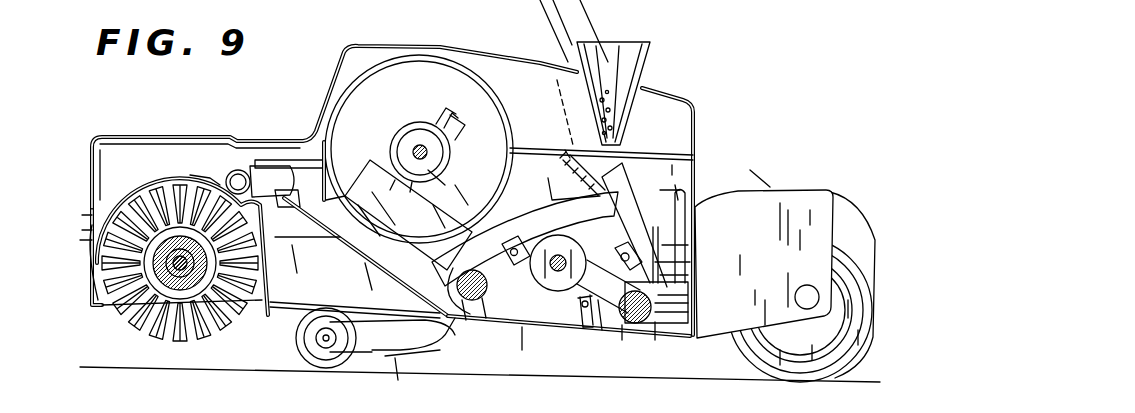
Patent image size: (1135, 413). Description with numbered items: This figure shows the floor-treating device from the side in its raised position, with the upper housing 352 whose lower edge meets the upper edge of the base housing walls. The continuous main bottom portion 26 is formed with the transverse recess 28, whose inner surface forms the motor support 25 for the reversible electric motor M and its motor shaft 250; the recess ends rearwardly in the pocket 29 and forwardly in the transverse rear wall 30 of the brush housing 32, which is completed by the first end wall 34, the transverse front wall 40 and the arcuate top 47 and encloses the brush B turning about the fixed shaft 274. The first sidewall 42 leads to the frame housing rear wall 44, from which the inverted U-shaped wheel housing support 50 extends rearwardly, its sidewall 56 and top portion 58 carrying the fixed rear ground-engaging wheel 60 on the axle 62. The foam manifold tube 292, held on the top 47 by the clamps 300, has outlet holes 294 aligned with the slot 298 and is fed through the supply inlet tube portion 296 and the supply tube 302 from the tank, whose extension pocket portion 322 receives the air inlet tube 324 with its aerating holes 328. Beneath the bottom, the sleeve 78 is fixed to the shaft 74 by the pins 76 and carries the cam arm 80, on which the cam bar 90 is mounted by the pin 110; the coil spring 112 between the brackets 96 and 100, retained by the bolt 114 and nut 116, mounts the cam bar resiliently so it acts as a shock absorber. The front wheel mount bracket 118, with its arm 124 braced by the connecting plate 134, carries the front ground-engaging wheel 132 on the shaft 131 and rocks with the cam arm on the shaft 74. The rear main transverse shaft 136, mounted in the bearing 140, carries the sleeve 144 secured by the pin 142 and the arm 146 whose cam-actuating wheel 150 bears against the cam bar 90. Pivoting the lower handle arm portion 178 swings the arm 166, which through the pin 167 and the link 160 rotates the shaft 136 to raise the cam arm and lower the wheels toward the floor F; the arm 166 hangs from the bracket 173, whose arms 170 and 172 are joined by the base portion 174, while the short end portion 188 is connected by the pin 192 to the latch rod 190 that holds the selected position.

The housing 352 is at (345, 52).
The connecting plate 134 is at (366, 34).
The top portion 58 is at (795, 188).
The fixed rear ground-engaging wheel 60 is at (850, 225).
The sidewall 56 is at (806, 205).
The wheel housing support 50 is at (783, 178).
The axle 62 is at (807, 285).
The tank extension pocket portion 322 is at (642, 82).
The air inlet tube 324 is at (605, 62).
The lower portion of handle arm 178 is at (583, 13).
The holes 328 is at (605, 98).
The reversible electric motor M is at (420, 72).
The motor shaft 250 is at (430, 152).
The supply tube 302 is at (479, 146).
The first sidewall 42 is at (478, 207).
The motor support 25 is at (408, 234).
The pocket 29 is at (462, 197).
The outlet holes 294 is at (248, 176).
The foam manifold tube 292 is at (292, 160).
The clamps 300 is at (232, 170).
The supply inlet tube portion 296 is at (330, 170).
The slot 298 is at (205, 178).
The arcuate top 47 is at (138, 182).
The brush housing 32 is at (178, 170).
The transverse front wall 40 is at (90, 292).
The first end wall 34 is at (104, 310).
The transverse rear wall 30 is at (268, 289).
The brush B is at (100, 262).
The fixed shaft 274 is at (165, 285).
The transverse recess 28 is at (352, 268).
The continuous main bottom portion 26 is at (522, 330).
The shaft 74 is at (514, 326).
The front ground-engaging wheel 132 is at (302, 358).
The shaft 131 is at (318, 340).
The arm 124 is at (358, 358).
The front wheel mount bracket 118 is at (413, 365).
The pins 76 is at (458, 335).
The sleeve 78 is at (475, 302).
The cam bar 90 is at (530, 236).
The pin 110 is at (505, 254).
The cam-actuating wheel 150 is at (560, 293).
The cam arm 80 is at (540, 282).
The arm 146 is at (580, 308).
The angularly disposed short end portion 188 is at (586, 330).
The pin 192 is at (600, 330).
The rear main transverse shaft 136 is at (640, 328).
The pin 142 is at (622, 342).
The bearing 140 is at (655, 330).
The latch rod 190 is at (670, 325).
The inverted U-shaped bracket 96 is at (635, 195).
The coil spring 112 is at (672, 170).
The inverted U-shaped bracket 100 is at (543, 187).
The bolt 114 is at (562, 152).
The nut 116 is at (565, 148).
The arm 170 is at (600, 178).
The arm 166 is at (620, 192).
The bracket 173 is at (665, 186).
The arm 172 is at (706, 192).
The bracket base portion 174 is at (700, 230).
The pin 167 is at (694, 247).
The frame housing rear wall 44 is at (697, 265).
The link 160 is at (692, 282).
The sleeve 144 is at (690, 307).
The floor F is at (208, 365).